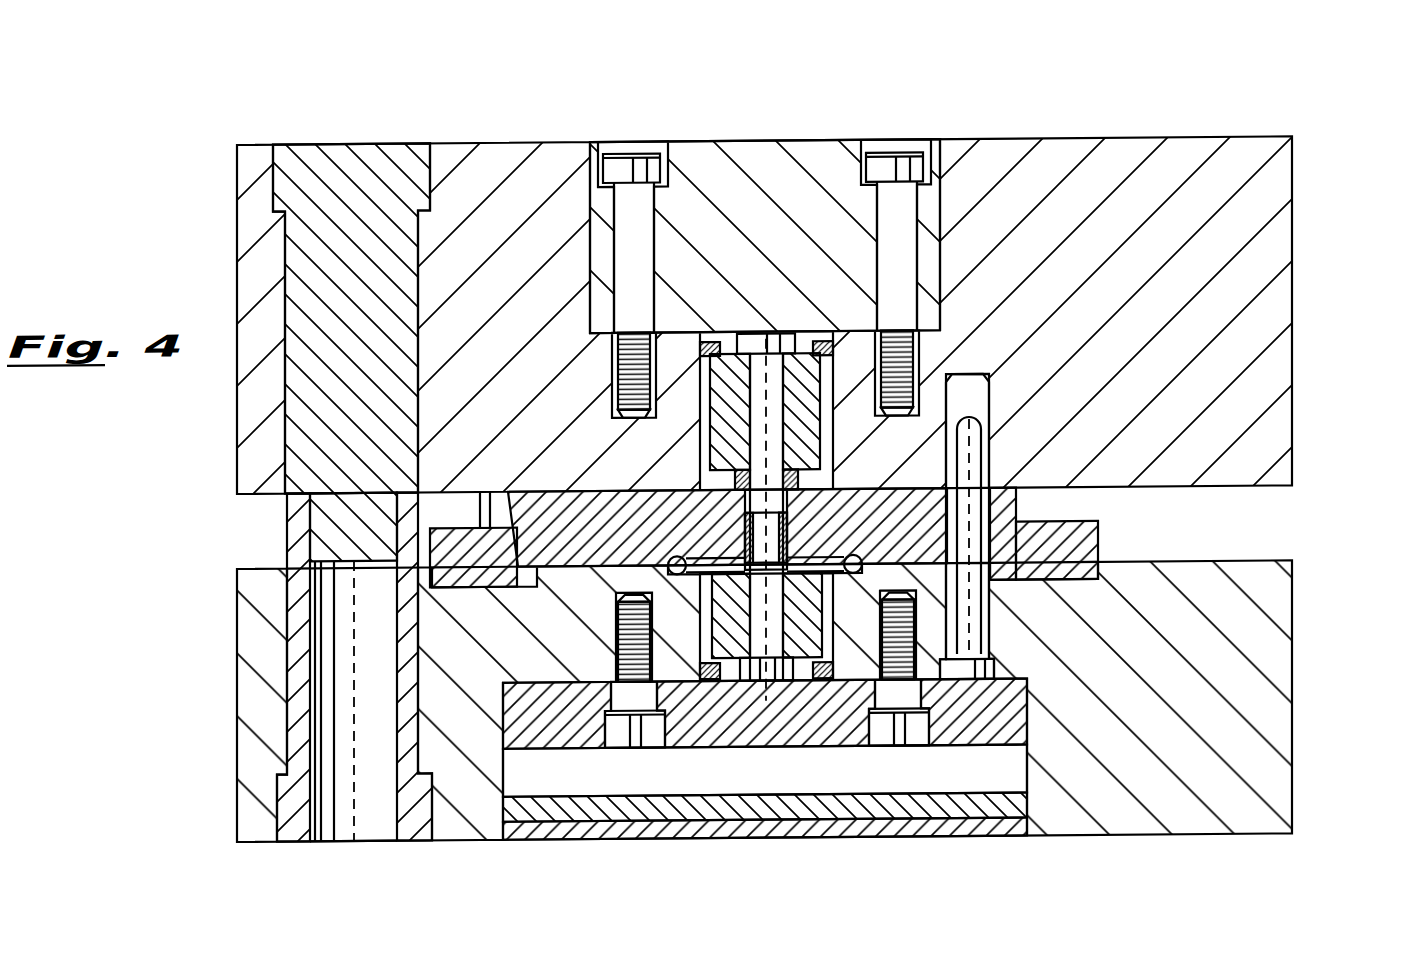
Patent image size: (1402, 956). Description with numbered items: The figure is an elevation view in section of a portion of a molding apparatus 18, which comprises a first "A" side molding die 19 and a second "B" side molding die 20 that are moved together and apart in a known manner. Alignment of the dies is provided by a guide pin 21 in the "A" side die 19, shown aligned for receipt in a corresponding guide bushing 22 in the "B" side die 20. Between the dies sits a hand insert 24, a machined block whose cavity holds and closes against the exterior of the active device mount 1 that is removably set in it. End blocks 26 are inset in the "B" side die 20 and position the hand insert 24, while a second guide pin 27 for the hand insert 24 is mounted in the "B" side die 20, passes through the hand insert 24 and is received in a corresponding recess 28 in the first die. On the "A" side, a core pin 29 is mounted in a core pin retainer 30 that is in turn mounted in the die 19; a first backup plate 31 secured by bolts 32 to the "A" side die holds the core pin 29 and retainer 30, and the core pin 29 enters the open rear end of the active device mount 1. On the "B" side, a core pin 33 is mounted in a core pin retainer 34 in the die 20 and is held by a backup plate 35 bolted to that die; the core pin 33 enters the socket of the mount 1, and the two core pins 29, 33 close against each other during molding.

The active device mount 1 is at (730, 540).
The molding apparatus 18 is at (562, 122).
The "A" side molding die 19 is at (1112, 165).
The "B" side molding die 20 is at (1265, 789).
The guide pin 21 is at (358, 161).
The guide bushing 22 is at (297, 835).
The hand insert 24 is at (590, 502).
The end blocks 26 is at (484, 531).
The guide pin 27 is at (981, 636).
The recess 28 is at (973, 392).
The "A" side core pin 29 is at (733, 369).
The core pin retainer 30 is at (722, 396).
The first backup plate 31 is at (813, 146).
The bolts 32 is at (617, 157).
The "B" side core pin 33 is at (757, 680).
The core pin retainer 34 is at (710, 649).
The backup plate 35 is at (572, 714).